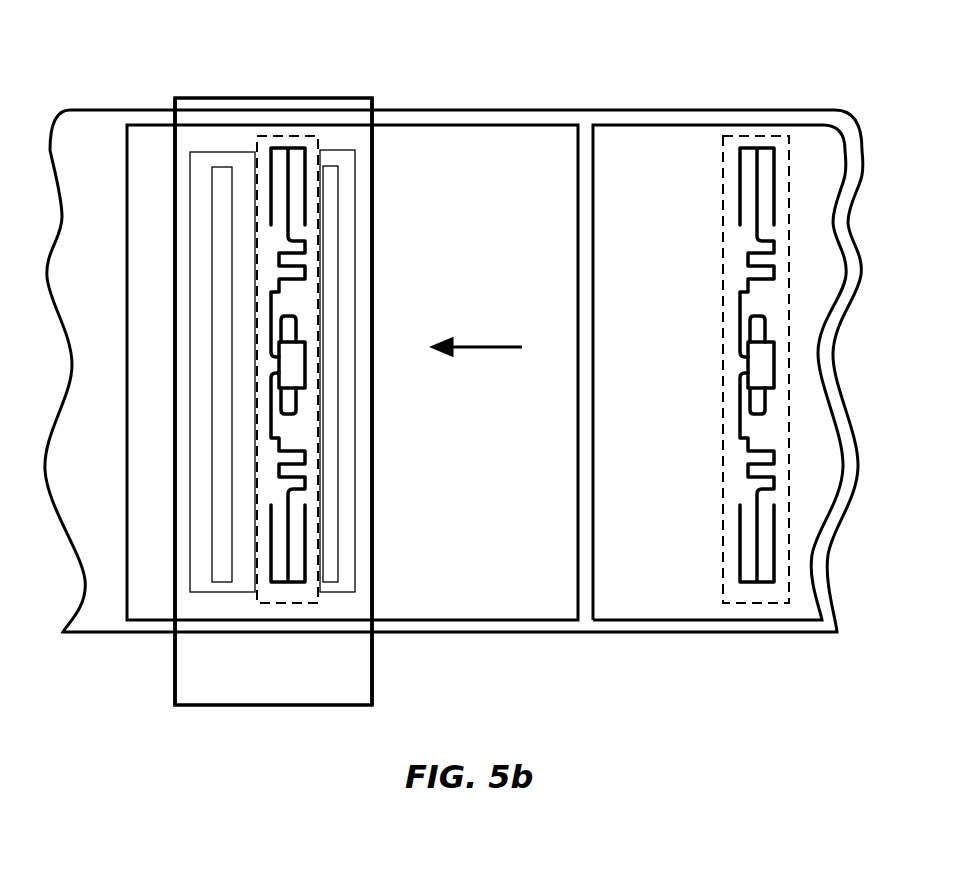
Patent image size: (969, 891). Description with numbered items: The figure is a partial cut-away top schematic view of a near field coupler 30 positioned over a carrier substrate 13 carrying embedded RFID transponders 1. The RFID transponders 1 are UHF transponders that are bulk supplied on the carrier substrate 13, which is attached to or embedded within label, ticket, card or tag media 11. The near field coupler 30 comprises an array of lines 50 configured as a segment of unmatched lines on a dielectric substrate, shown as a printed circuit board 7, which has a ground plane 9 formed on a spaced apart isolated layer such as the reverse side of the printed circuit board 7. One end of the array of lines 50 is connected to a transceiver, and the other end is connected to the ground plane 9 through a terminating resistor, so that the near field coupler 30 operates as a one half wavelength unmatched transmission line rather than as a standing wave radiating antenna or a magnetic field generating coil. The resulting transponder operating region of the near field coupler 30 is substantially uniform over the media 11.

The RFID transponder 1 is at (310, 137).
The printed circuit board 7 is at (372, 650).
The ground plane 9 is at (173, 668).
The media 11 is at (513, 590).
The carrier substrate 13 is at (512, 110).
The near field coupler 30 is at (262, 373).
The array of lines 50 is at (247, 175).